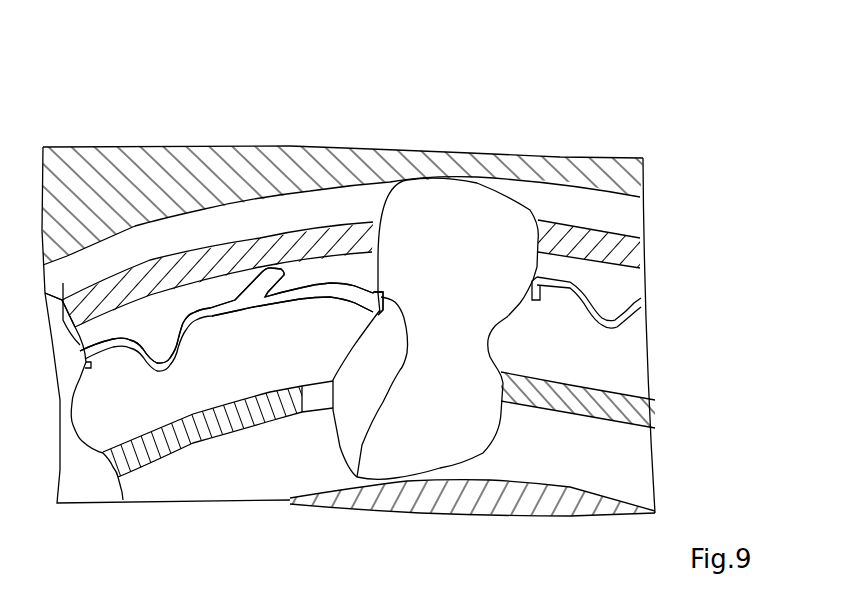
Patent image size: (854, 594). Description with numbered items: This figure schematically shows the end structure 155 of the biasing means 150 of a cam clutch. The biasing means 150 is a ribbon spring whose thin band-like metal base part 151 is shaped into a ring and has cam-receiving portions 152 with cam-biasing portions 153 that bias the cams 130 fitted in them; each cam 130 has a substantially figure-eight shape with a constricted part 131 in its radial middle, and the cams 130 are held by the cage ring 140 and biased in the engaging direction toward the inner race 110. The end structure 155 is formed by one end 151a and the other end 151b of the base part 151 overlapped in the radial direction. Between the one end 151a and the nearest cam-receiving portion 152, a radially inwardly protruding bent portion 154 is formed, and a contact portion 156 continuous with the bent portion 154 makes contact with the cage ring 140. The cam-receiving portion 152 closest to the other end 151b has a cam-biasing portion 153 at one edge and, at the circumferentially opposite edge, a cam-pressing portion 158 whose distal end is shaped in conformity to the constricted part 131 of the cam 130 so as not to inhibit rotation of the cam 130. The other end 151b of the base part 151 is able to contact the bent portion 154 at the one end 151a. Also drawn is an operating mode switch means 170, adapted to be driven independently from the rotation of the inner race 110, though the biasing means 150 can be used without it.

The inner race 110 is at (480, 505).
The cam 130 is at (443, 227).
The constricted part 131 is at (358, 480).
The cage ring 140 is at (608, 233).
The biasing means 150 is at (565, 272).
The base part 151 is at (148, 92).
The one end of the base part 151a is at (206, 301).
The other end of the base part 151b is at (302, 279).
The cam-receiving portion 152 is at (63, 283).
The cam-biasing portion 153 is at (540, 286).
The bent portion 154 is at (146, 348).
The end structure 155 is at (345, 66).
The contact portion 156 is at (270, 265).
The cam-pressing portion 158 is at (337, 281).
The operating mode switch means 170 is at (258, 420).